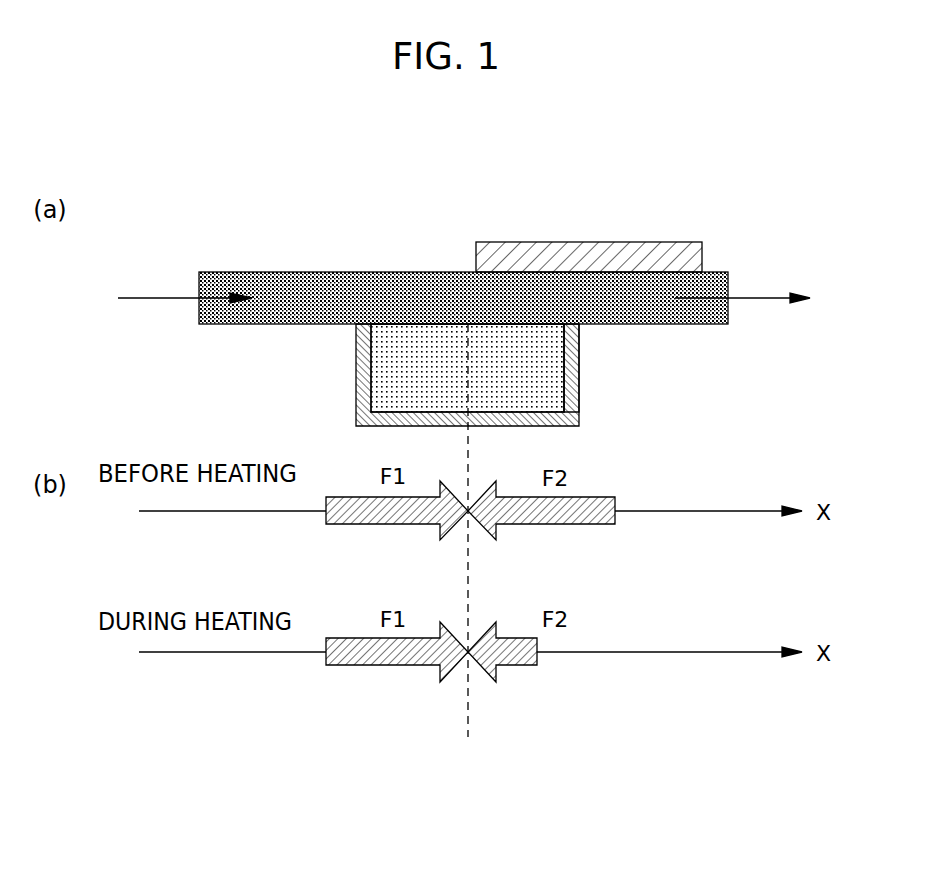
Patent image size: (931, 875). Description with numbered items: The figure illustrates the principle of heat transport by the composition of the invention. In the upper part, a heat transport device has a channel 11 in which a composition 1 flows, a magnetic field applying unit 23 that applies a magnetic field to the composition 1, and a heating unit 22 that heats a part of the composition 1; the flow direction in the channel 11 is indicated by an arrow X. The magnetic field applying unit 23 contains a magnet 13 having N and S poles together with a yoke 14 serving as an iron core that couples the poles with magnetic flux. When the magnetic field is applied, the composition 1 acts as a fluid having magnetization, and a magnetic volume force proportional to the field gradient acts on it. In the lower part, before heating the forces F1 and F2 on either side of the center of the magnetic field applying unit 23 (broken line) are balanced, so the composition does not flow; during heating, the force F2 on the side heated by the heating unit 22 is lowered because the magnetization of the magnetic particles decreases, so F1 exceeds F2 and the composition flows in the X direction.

The composition 1 is at (477, 322).
The channel 11 is at (290, 271).
The magnet 13 is at (385, 383).
The yoke 14 is at (580, 386).
The heating unit 22 is at (573, 248).
The magnetic field applying unit 23 is at (579, 425).